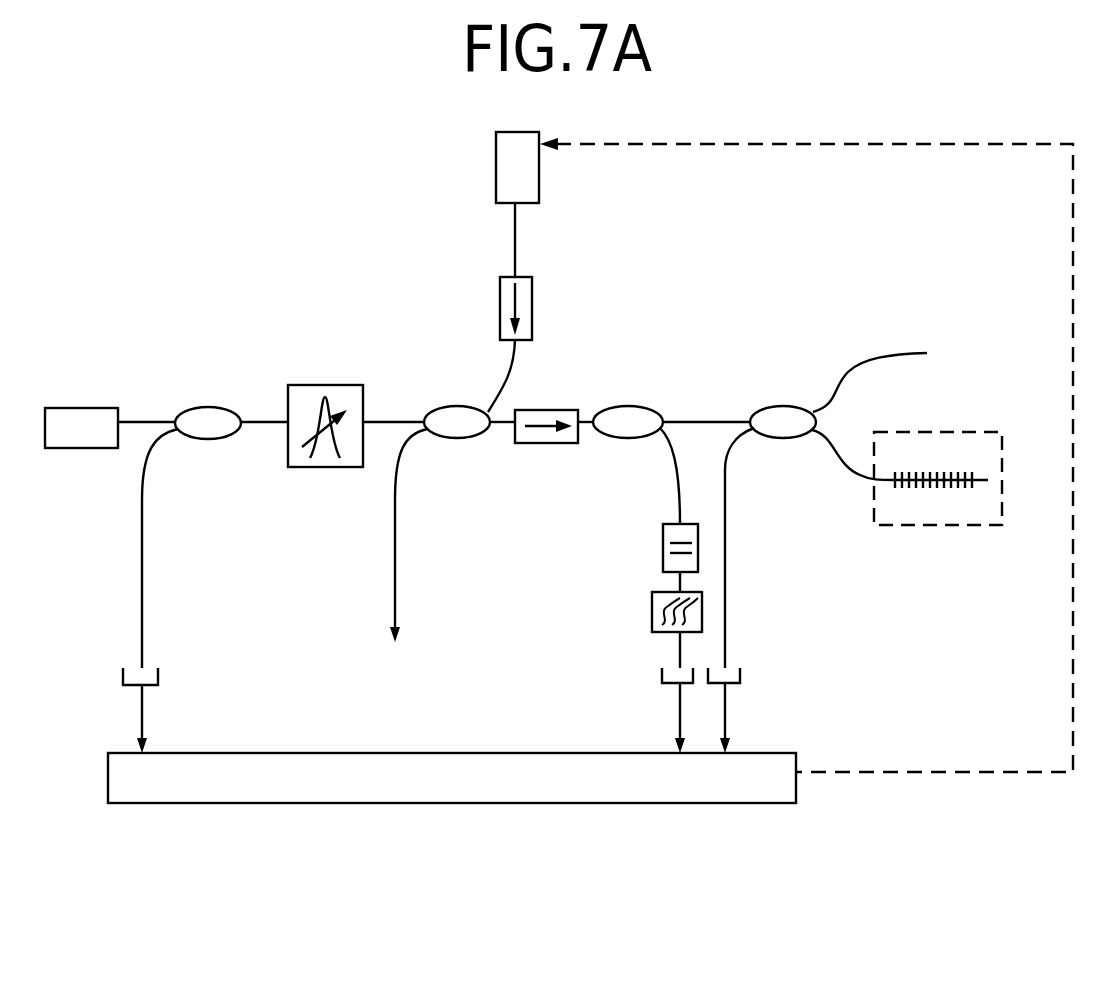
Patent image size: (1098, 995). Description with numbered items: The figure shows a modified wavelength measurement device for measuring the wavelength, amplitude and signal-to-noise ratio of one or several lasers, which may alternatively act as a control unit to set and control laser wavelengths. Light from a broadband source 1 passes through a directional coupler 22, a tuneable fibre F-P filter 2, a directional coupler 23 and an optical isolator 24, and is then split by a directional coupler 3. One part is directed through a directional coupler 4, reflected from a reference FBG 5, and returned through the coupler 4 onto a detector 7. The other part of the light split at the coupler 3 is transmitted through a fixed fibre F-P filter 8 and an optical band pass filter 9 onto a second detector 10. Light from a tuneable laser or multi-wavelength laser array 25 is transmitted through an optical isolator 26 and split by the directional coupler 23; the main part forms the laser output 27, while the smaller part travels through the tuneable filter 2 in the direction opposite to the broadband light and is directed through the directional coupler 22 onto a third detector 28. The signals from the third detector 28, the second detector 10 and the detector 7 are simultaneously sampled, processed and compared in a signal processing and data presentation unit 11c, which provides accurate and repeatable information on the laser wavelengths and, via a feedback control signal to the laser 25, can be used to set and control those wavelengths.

The broadband source 1 is at (81, 408).
The directional coupler 22 is at (208, 404).
The tuneable fibre F-P filter 2 is at (325, 403).
The directional coupler 23 is at (457, 402).
The optical isolator 24 is at (546, 444).
The directional coupler 3 is at (628, 400).
The directional coupler 4 is at (869, 416).
The reference FBG 5 is at (938, 478).
The tuneable laser or multi-wavelength laser array 25 is at (762, 452).
The optical isolator 26 is at (495, 344).
The fixed fibre F-P filter 8 is at (660, 500).
The optical band pass filter 9 is at (662, 602).
The second detector 10 is at (658, 692).
The detector 7 is at (737, 590).
The third detector 28 is at (162, 591).
The laser output 27 is at (402, 553).
The signal processing and data presentation unit 11c is at (452, 778).